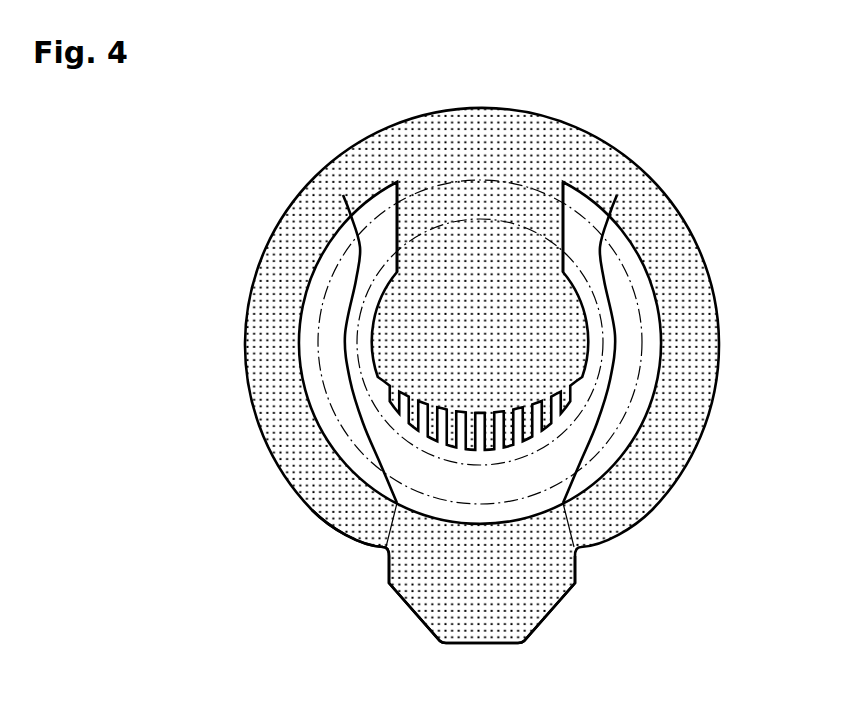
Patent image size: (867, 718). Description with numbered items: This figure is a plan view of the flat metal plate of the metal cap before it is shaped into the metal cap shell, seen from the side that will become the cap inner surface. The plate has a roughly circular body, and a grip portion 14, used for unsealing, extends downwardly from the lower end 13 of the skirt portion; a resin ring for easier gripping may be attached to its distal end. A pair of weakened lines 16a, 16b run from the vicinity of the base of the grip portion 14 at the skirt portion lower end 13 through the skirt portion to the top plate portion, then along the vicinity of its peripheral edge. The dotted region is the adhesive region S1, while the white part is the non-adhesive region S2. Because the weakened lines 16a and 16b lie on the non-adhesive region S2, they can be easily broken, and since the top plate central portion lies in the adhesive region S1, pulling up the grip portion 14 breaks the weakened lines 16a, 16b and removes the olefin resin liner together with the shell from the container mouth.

The lower end of the skirt portion 13 is at (385, 550).
The grip portion 14 is at (384, 568).
The weakened line 16a is at (343, 338).
The weakened line 16b is at (617, 338).
The adhesive region S1 is at (442, 273).
The non-adhesive region S2 is at (582, 238).